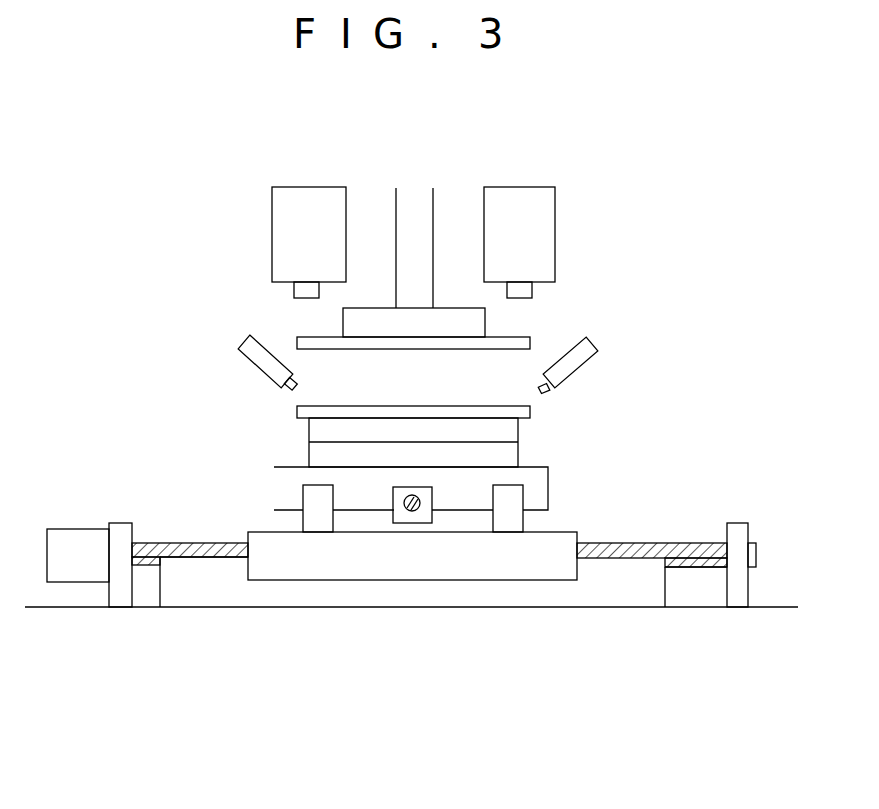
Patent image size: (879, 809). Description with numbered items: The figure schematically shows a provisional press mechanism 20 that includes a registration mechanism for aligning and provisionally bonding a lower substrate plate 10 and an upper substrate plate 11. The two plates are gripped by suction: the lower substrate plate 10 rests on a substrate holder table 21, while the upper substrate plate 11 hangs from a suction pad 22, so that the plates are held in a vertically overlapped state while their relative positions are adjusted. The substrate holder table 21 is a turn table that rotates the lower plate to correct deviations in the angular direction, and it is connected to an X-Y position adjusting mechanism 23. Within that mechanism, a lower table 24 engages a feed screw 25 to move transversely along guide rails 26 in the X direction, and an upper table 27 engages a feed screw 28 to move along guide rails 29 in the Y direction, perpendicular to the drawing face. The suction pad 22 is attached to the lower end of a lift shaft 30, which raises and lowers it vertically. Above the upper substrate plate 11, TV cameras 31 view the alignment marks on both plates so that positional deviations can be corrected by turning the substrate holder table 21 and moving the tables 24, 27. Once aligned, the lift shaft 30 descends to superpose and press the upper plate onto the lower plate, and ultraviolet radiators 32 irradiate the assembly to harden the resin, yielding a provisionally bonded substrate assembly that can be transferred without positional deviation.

The lower substrate plate 10 is at (530, 413).
The upper substrate plate 11 is at (530, 340).
The provisional press mechanism 20 is at (608, 215).
The substrate holder table 21 is at (318, 432).
The suction pad 22 is at (445, 317).
The X-Y position adjusting mechanism 23 is at (272, 480).
The lower table 24 is at (353, 568).
The feed screw 25 is at (158, 563).
The guide rails 26 is at (638, 593).
The upper table 27 is at (540, 487).
The feed screw 28 is at (412, 512).
The guide rails 29 is at (313, 522).
The lift shaft 30 is at (412, 215).
The TV cameras 31 is at (275, 206).
The ultraviolet radiators 32 is at (250, 340).